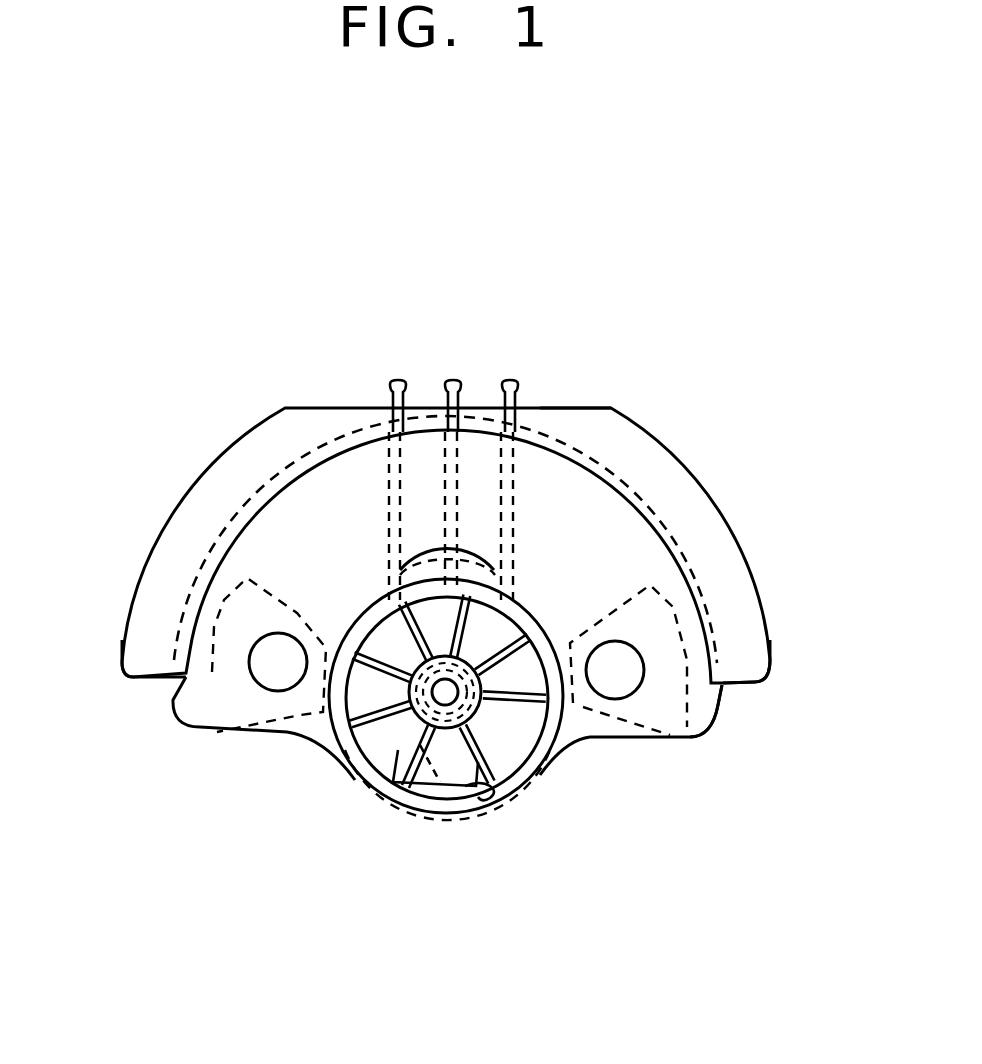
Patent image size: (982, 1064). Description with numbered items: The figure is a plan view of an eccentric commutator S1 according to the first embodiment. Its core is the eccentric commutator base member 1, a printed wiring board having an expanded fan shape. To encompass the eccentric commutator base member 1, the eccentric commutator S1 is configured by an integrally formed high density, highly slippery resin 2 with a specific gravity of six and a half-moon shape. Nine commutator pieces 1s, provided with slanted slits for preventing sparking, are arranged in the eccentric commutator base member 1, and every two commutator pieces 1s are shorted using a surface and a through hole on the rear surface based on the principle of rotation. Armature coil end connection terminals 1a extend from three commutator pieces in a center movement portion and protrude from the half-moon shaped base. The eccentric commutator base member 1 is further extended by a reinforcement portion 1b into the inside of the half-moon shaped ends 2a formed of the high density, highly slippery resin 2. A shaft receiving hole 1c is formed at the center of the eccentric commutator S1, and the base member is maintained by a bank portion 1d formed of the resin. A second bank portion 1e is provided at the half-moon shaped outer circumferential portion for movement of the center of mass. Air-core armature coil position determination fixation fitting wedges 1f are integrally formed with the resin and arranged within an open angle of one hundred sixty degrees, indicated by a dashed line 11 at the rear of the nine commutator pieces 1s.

The eccentric commutator base member 1 is at (190, 688).
The armature coil end connection terminals 1a is at (398, 380).
The reinforcement portion 1b is at (722, 687).
The shaft receiving hole 1c is at (500, 803).
The bank portion 1d is at (397, 753).
The second bank portion 1e is at (590, 427).
The air-core armature coil position determination fixation fitting wedges 1f is at (237, 697).
The commutator pieces 1s is at (427, 812).
The high density, highly slippery resin 2 is at (607, 518).
The half-moon shaped ends 2a is at (168, 672).
The inner edge line 11 is at (688, 558).
The eccentric commutator S1 is at (225, 348).